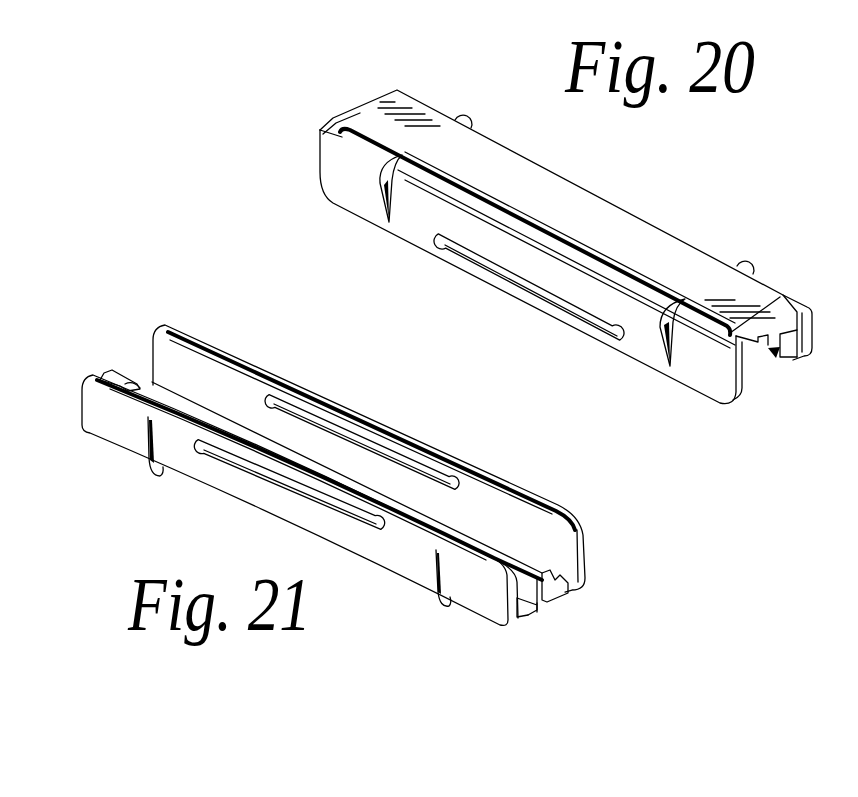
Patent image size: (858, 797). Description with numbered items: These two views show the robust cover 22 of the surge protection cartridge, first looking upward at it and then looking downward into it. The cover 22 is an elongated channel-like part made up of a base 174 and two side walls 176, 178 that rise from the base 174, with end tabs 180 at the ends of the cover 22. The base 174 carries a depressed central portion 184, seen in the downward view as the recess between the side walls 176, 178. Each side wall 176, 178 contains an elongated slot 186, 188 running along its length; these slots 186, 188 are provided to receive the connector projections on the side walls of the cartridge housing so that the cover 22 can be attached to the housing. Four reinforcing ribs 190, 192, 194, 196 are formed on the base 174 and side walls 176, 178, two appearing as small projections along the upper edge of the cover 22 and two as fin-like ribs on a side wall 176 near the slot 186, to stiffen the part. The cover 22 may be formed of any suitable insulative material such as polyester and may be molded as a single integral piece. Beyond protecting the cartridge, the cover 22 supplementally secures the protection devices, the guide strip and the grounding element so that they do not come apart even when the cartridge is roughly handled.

In FIG. 20, the cover 22 is at (603, 170).
In FIG. 21, the cover 22 is at (250, 340).
In FIG. 20, the base 174 is at (412, 135).
In FIG. 20, the side wall 176 is at (417, 238).
In FIG. 21, the side wall 176 is at (508, 508).
In FIG. 20, the side wall 178 is at (802, 355).
In FIG. 21, the side wall 178 is at (407, 560).
In FIG. 20, the end tab 180 is at (782, 362).
In FIG. 21, the end tab 180 is at (570, 600).
In FIG. 21, the depressed central portion 184 is at (137, 380).
In FIG. 20, the elongated slot 186 is at (487, 260).
In FIG. 21, the elongated slot 186 is at (310, 493).
In FIG. 21, the elongated slot 188 is at (412, 458).
In FIG. 20, the reinforcing rib 190 is at (380, 185).
In FIG. 20, the reinforcing rib 192 is at (467, 115).
In FIG. 20, the reinforcing rib 194 is at (745, 262).
In FIG. 20, the reinforcing rib 196 is at (663, 335).